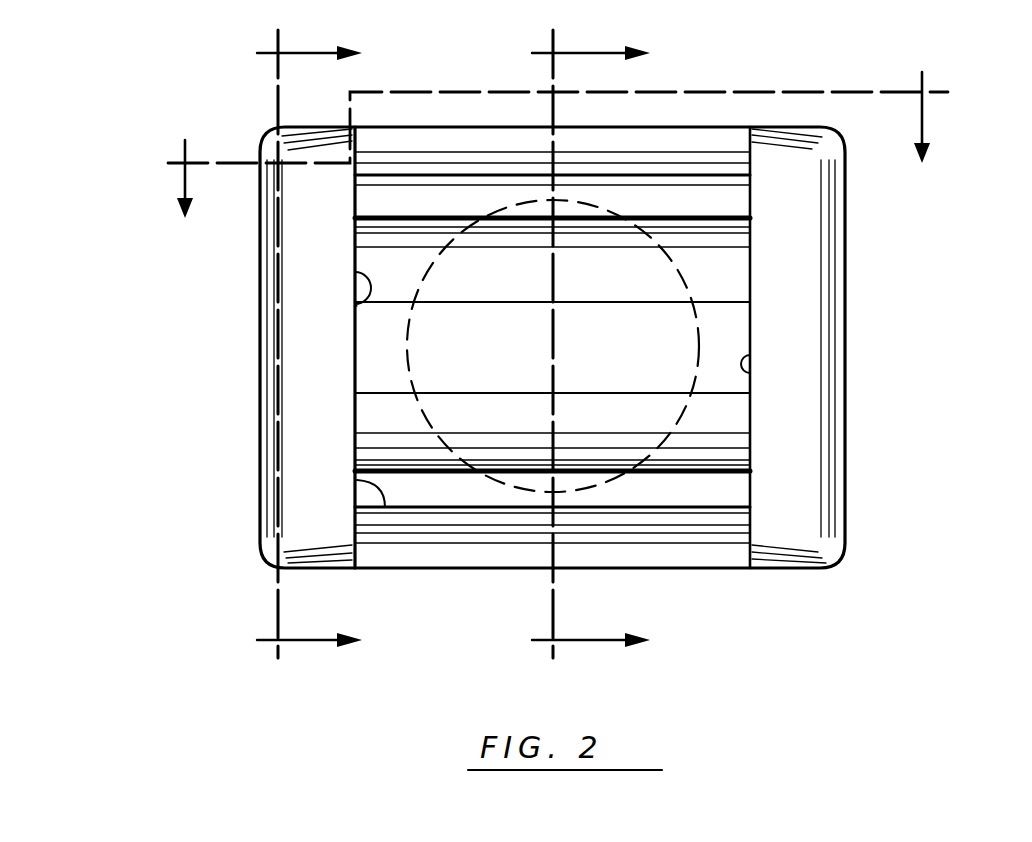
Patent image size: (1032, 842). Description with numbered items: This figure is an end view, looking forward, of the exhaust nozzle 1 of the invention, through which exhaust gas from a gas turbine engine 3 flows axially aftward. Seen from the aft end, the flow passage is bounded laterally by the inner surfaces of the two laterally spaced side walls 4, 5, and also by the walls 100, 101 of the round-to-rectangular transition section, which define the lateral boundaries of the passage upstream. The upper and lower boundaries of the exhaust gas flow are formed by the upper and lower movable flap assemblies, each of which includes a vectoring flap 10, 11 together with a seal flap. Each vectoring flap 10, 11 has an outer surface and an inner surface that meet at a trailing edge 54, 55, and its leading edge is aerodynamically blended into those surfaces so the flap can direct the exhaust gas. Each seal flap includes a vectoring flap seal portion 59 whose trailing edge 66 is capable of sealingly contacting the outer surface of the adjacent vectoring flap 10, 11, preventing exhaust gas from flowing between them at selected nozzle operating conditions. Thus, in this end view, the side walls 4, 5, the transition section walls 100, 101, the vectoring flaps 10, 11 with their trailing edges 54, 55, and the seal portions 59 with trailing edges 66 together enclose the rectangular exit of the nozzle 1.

The exhaust nozzle 1 is at (262, 122).
The gas turbine engine 3 is at (727, 348).
The side wall 4 is at (360, 307).
The side wall 5 is at (742, 362).
The vectoring flap 10 is at (740, 276).
The vectoring flap 11 is at (745, 428).
The trailing edge 54 is at (728, 232).
The trailing edge 55 is at (713, 478).
The vectoring flap seal portion 59 is at (703, 118).
The trailing edge 66 is at (368, 188).
The wall 100 is at (742, 333).
The wall 101 is at (377, 338).